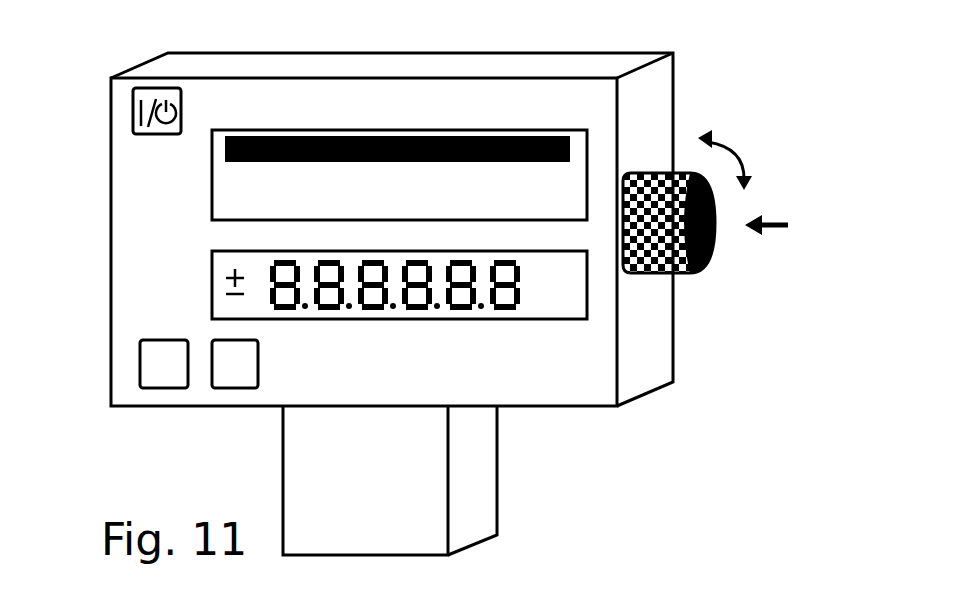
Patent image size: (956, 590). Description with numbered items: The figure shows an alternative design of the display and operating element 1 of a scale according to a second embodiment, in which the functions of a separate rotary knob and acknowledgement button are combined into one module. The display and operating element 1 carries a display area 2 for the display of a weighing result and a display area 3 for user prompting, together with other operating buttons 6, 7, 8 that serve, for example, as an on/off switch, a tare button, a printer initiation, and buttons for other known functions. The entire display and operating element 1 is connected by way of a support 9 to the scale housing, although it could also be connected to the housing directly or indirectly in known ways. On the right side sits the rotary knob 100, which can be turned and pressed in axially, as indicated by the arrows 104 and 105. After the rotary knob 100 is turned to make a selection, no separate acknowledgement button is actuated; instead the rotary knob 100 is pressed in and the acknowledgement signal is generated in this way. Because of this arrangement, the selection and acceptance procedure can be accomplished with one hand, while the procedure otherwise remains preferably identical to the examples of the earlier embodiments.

The display and operating element 1 is at (543, 383).
The display area for the display of a weighing result 2 is at (575, 305).
The display area for user prompting 3 is at (582, 170).
The operating button 6 is at (133, 103).
The operating button 7 is at (155, 388).
The operating button 8 is at (230, 388).
The support 9 is at (478, 513).
The rotary knob 100 is at (677, 273).
The arrow 104 is at (732, 138).
The arrow 105 is at (777, 233).